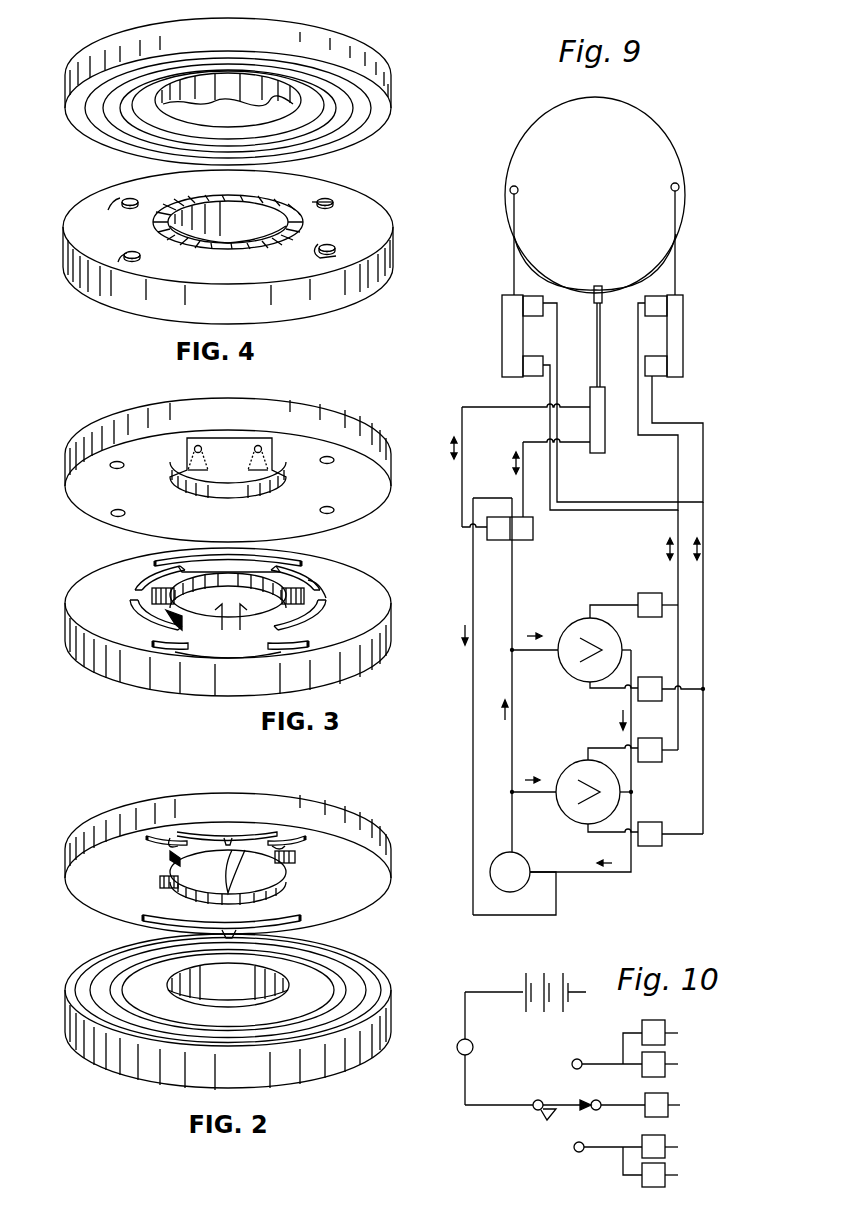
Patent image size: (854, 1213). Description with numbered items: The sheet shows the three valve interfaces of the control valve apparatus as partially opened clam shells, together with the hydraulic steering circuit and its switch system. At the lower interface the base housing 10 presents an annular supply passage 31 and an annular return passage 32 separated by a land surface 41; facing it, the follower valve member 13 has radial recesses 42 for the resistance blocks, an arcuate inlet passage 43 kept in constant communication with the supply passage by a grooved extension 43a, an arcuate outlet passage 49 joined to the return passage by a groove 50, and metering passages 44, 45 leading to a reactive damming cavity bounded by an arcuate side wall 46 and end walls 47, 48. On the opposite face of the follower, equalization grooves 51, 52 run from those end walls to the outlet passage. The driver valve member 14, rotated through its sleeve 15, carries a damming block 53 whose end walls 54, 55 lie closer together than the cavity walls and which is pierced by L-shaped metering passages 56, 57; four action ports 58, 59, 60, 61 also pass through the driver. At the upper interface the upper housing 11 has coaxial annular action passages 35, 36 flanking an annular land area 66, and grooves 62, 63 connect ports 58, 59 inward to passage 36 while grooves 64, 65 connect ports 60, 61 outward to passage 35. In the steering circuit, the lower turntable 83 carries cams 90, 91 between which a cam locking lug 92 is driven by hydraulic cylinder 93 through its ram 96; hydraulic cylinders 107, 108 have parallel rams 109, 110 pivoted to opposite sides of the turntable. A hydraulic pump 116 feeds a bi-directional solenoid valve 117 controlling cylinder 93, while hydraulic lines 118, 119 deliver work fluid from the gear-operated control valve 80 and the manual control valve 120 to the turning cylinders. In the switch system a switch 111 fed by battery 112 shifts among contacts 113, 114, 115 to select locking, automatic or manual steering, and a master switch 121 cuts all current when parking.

In FIG. 2, the base housing 10 is at (66, 1034).
In FIG. 4, the upper housing 11 is at (66, 80).
In FIG. 3, the follower valve member 13 is at (68, 644).
In FIG. 2, the follower valve member 13 is at (62, 870).
In FIG. 4, the driver valve member 14 is at (62, 252).
In FIG. 3, the driver valve member 14 is at (62, 466).
In FIG. 4, the sleeve 15 is at (228, 244).
In FIG. 2, the sleeve 15 is at (228, 985).
In FIG. 2, the annular supply passage 31 is at (115, 990).
In FIG. 2, the annular return passage 32 is at (110, 1040).
In FIG. 4, the annular action-fluid passage 35 is at (92, 110).
In FIG. 4, the annular action-fluid passage 36 is at (128, 92).
In FIG. 2, the land surface 41 is at (130, 1045).
In FIG. 3, the radial recesses 42 is at (152, 596).
In FIG. 2, the radial recesses 42 is at (160, 883).
In FIG. 3, the arcuate inlet passage 43 is at (228, 662).
In FIG. 2, the arcuate inlet passage 43 is at (214, 832).
In FIG. 2, the grooved extension 43a is at (229, 840).
In FIG. 3, the metering passage 44 is at (165, 647).
In FIG. 2, the metering passage 44 is at (160, 838).
In FIG. 3, the metering passage 45 is at (290, 650).
In FIG. 2, the metering passage 45 is at (280, 838).
In FIG. 3, the side wall 46 is at (240, 633).
In FIG. 2, the side wall 46 is at (250, 893).
In FIG. 3, the end wall 47 is at (166, 616).
In FIG. 2, the end wall 47 is at (170, 856).
In FIG. 3, the end wall 48 is at (304, 598).
In FIG. 2, the end wall 48 is at (284, 857).
In FIG. 3, the arcuate outlet passage 49 is at (300, 560).
In FIG. 2, the arcuate outlet passage 49 is at (165, 920).
In FIG. 2, the groove 50 is at (240, 930).
In FIG. 3, the equalization passage 51 is at (142, 588).
In FIG. 3, the equalization passage 52 is at (326, 592).
In FIG. 3, the damming block 53 is at (235, 438).
In FIG. 3, the end wall 54 is at (193, 449).
In FIG. 3, the end wall 55 is at (263, 452).
In FIG. 3, the metering passage 56 is at (206, 472).
In FIG. 3, the metering passage 57 is at (252, 472).
In FIG. 4, the action port 58 is at (338, 204).
In FIG. 3, the action port 58 is at (331, 513).
In FIG. 4, the action port 59 is at (336, 248).
In FIG. 3, the action port 59 is at (329, 457).
In FIG. 4, the action port 60 is at (134, 252).
In FIG. 3, the action port 60 is at (117, 461).
In FIG. 4, the action port 61 is at (128, 198).
In FIG. 3, the action port 61 is at (114, 515).
In FIG. 4, the groove 62 is at (316, 202).
In FIG. 4, the groove 63 is at (337, 255).
In FIG. 4, the groove 64 is at (141, 257).
In FIG. 4, the groove 65 is at (116, 211).
In FIG. 4, the annular land area 66 is at (112, 125).
In FIG. 9, the lower turntable 83 is at (586, 188).
In FIG. 9, the cam 90 is at (586, 284).
In FIG. 9, the cam 91 is at (623, 284).
In FIG. 9, the cam locking lug 92 is at (603, 297).
In FIG. 9, the hydraulic cylinder 93 is at (605, 432).
In FIG. 9, the ram 96 is at (596, 362).
In FIG. 9, the hydraulic cylinder 107 is at (502, 348).
In FIG. 9, the hydraulic cylinder 108 is at (683, 346).
In FIG. 9, the ram member 109 is at (513, 270).
In FIG. 9, the ram member 110 is at (676, 264).
In FIG. 10, the switch 111 is at (547, 1118).
In FIG. 10, the battery source 112 is at (520, 1003).
In FIG. 10, the switch contact 113 is at (599, 1101).
In FIG. 10, the switch contact 114 is at (580, 1059).
In FIG. 10, the switch contact 115 is at (579, 1153).
In FIG. 9, the hydraulic pump 116 is at (504, 856).
In FIG. 9, the bi-directional solenoid-operated valve 117 is at (510, 541).
In FIG. 9, the hydraulic line 118 is at (678, 534).
In FIG. 9, the hydraulic line 119 is at (704, 540).
In FIG. 9, the manual-operated control valve apparatus 120 is at (574, 768).
In FIG. 10, the master switch 121 is at (457, 1046).
In FIG. 9, the control valve apparatus 80 is at (578, 628).